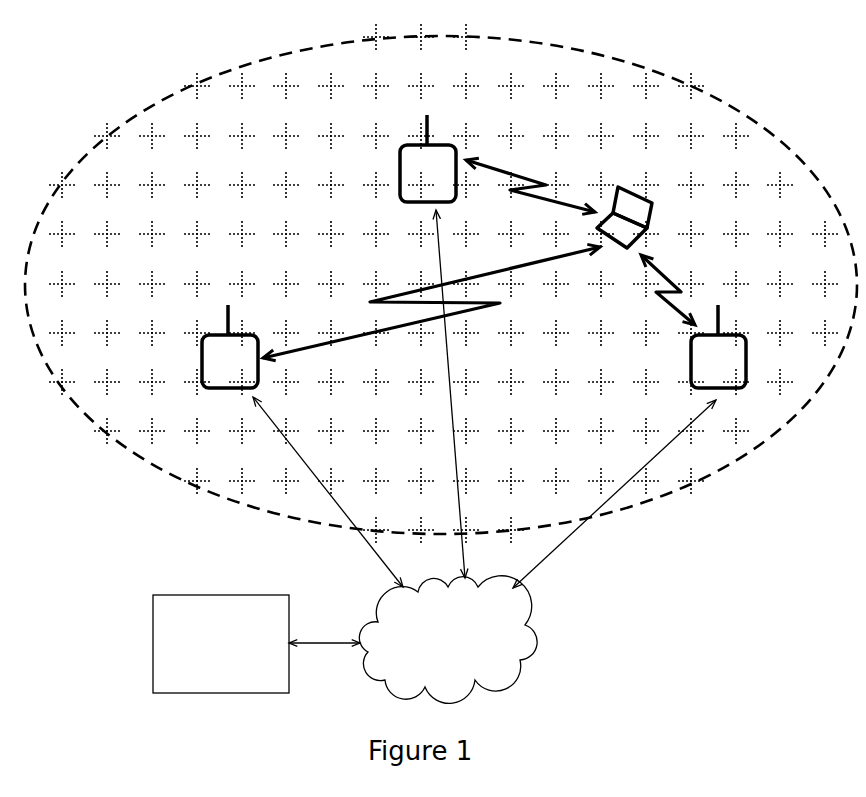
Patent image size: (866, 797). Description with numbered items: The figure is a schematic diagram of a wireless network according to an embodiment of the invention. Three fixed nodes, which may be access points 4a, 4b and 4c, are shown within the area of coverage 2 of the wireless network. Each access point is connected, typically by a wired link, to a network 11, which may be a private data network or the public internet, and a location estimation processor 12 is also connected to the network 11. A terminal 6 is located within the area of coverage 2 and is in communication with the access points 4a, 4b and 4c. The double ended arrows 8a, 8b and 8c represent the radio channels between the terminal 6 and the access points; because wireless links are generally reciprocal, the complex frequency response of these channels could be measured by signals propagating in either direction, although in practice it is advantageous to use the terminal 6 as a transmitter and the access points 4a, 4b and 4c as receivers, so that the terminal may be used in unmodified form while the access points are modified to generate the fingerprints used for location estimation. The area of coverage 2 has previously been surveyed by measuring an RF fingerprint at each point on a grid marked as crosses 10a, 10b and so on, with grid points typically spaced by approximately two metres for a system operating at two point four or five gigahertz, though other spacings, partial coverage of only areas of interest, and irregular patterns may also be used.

The area of coverage 2 is at (766, 132).
The access point 4a is at (220, 330).
The access point 4b is at (400, 175).
The access point 4c is at (746, 353).
The terminal 6 is at (630, 182).
The double ended arrow 8a is at (466, 270).
The double ended arrow 8b is at (515, 167).
The double ended arrow 8c is at (680, 280).
The cross 10a is at (200, 185).
The cross 10b is at (245, 185).
The network 11 is at (535, 632).
The location estimation processor 12 is at (207, 590).